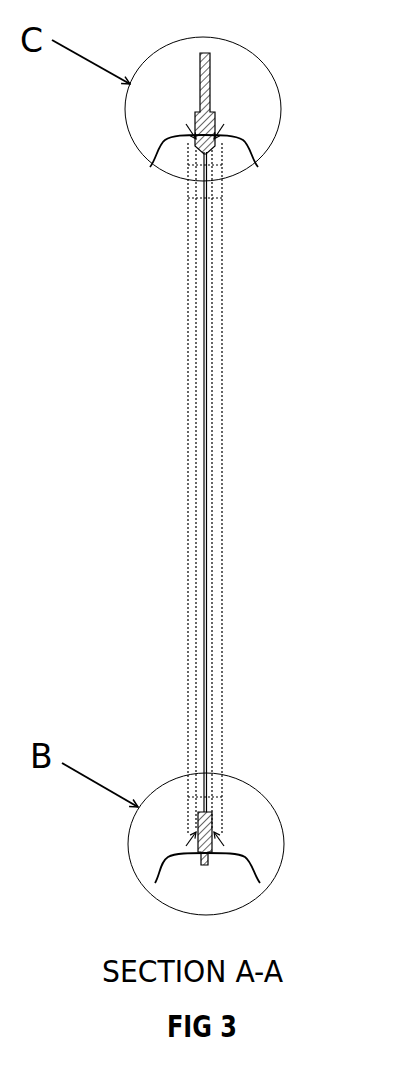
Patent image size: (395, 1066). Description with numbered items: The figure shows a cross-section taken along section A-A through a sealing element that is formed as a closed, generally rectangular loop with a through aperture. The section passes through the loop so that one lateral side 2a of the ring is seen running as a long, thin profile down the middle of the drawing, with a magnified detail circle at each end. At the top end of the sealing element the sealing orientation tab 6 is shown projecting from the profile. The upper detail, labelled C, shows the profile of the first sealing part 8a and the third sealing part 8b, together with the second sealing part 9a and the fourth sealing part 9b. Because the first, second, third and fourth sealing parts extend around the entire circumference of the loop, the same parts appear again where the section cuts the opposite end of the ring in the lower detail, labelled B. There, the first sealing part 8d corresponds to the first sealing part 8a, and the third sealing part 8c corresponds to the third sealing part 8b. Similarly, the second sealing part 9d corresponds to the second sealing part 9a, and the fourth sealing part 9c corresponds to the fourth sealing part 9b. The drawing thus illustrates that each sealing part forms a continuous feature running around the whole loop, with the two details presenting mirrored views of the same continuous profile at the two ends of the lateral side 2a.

The lateral side 2a is at (223, 483).
The sealing orientation tab 6 is at (210, 80).
The first sealing part 8a is at (258, 167).
The third sealing part 8b is at (150, 167).
The third sealing part 8c is at (194, 826).
The first sealing part 8d is at (192, 832).
The second sealing part 9a is at (206, 113).
The fourth sealing part 9b is at (196, 114).
The fourth sealing part 9c is at (155, 883).
The second sealing part 9d is at (260, 883).